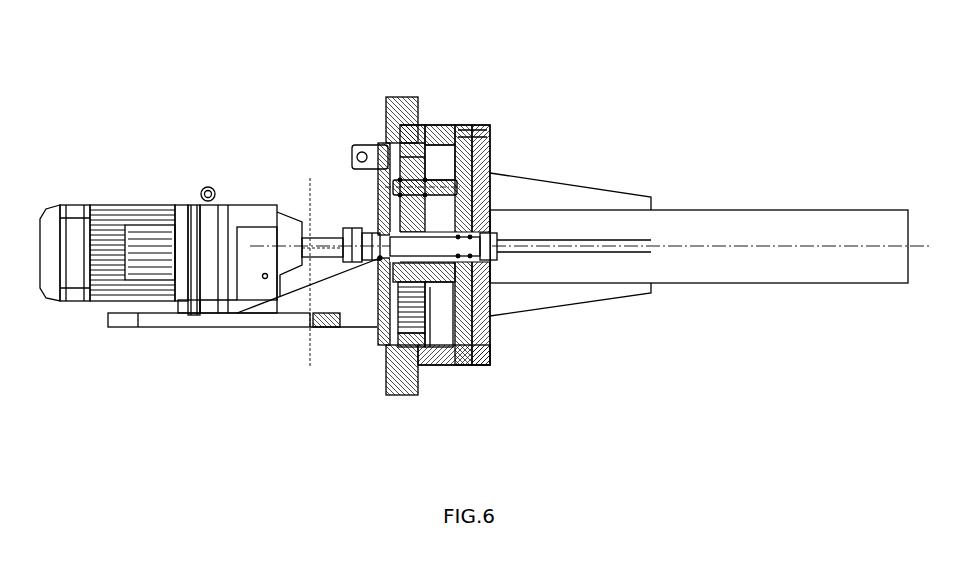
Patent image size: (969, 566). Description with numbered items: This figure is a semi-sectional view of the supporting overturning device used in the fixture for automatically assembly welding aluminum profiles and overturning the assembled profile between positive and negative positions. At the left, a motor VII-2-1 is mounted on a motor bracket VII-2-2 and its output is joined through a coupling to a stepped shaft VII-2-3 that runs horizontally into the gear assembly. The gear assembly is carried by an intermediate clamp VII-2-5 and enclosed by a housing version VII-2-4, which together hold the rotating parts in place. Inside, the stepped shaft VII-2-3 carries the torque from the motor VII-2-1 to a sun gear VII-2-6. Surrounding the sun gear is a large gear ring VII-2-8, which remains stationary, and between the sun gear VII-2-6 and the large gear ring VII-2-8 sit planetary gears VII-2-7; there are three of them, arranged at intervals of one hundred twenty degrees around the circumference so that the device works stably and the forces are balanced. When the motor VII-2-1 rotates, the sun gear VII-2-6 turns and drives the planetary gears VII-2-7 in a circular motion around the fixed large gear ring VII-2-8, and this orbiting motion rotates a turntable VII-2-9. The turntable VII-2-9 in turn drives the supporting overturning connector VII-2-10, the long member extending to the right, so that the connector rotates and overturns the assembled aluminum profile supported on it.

The motor VII-2-1 is at (218, 242).
The motor bracket VII-2-2 is at (293, 327).
The stepped shaft VII-2-3 is at (380, 235).
The housing version VII-2-4 is at (382, 345).
The intermediate clamp VII-2-5 is at (405, 97).
The sun gear VII-2-6 is at (428, 308).
The planetary gears VII-2-7 is at (430, 190).
The large gear ring VII-2-8 is at (410, 142).
The turntable VII-2-9 is at (497, 325).
The supporting overturning connector VII-2-10 is at (497, 247).